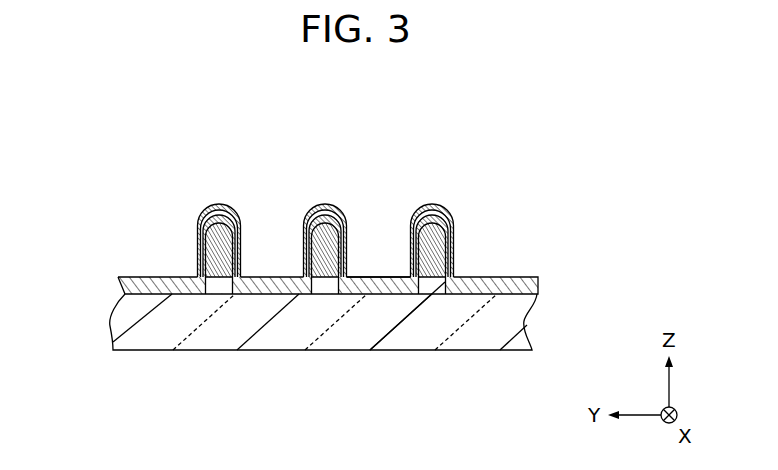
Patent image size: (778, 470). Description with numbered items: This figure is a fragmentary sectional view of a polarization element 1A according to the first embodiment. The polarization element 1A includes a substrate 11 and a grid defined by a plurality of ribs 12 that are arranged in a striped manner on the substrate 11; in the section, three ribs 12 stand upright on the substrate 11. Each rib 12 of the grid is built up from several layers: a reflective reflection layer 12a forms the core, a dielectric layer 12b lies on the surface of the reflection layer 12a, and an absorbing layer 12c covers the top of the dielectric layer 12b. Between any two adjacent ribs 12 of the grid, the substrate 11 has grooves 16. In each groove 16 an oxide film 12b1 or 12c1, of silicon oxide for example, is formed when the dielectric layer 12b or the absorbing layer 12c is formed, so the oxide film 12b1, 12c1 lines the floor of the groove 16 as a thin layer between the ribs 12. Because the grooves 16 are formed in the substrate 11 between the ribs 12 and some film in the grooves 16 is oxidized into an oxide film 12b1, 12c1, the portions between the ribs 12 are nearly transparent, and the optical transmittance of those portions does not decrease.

The polarization element 1A is at (562, 136).
The substrate 11 is at (524, 318).
The rib 12 is at (93, 142).
The reflection layer 12a is at (206, 258).
The dielectric layer 12b is at (199, 238).
The absorbing layer 12c is at (200, 219).
The oxide film 12c1 is at (218, 205).
The oxide film 12b1 is at (533, 282).
The groove 16 is at (379, 284).